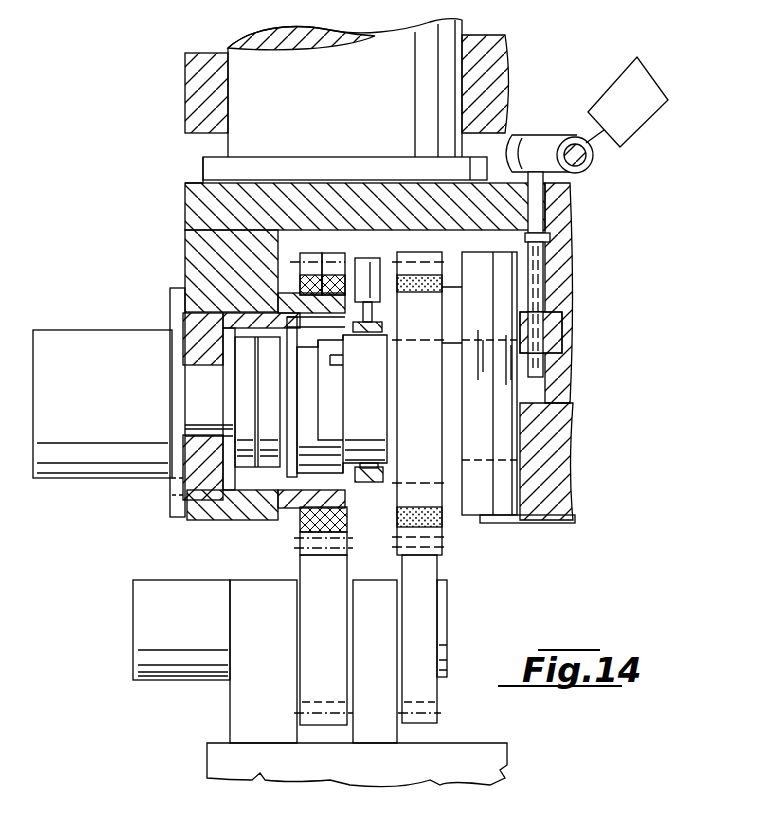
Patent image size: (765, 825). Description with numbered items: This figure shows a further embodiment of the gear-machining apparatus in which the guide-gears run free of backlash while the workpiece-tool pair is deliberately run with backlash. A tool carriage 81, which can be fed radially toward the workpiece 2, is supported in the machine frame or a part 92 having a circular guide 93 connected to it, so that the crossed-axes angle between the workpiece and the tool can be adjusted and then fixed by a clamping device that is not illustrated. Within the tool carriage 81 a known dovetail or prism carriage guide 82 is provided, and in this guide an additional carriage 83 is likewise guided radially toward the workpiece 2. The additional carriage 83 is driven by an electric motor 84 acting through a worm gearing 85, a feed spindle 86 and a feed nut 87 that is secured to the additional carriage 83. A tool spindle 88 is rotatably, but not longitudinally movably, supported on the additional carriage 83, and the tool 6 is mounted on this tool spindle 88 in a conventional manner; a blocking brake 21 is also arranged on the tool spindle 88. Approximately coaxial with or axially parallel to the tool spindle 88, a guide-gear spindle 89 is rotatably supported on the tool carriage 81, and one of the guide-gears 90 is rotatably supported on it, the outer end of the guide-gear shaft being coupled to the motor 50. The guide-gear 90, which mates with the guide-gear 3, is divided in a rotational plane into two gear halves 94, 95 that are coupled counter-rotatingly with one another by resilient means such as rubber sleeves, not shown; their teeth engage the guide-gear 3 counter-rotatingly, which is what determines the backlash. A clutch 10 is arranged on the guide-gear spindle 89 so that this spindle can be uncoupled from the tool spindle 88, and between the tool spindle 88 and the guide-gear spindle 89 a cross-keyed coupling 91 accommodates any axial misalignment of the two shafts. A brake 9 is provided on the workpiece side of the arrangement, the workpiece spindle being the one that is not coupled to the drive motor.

The workpiece 2 is at (430, 686).
The guide-gear 3 is at (325, 715).
The tool 6 is at (435, 515).
The brake 9 is at (140, 660).
The clutch 10 is at (240, 475).
The blocking brake 21 is at (360, 482).
The motor 50 is at (118, 417).
The tool carriage 81 is at (195, 250).
The carriage guide 82 is at (500, 522).
The additional carriage 83 is at (470, 512).
The electric motor 84 is at (620, 108).
The worm gearing 85 is at (545, 150).
The feed spindle 86 is at (550, 236).
The feed nut 87 is at (560, 325).
The tool spindle 88 is at (510, 425).
The guide-gear spindle 89 is at (223, 417).
The guide-gear 90 is at (298, 530).
The cross-keyed coupling 91 is at (335, 378).
The part 92 is at (190, 72).
The circular guide 93 is at (243, 118).
The gear half 94 is at (310, 265).
The gear half 95 is at (338, 265).